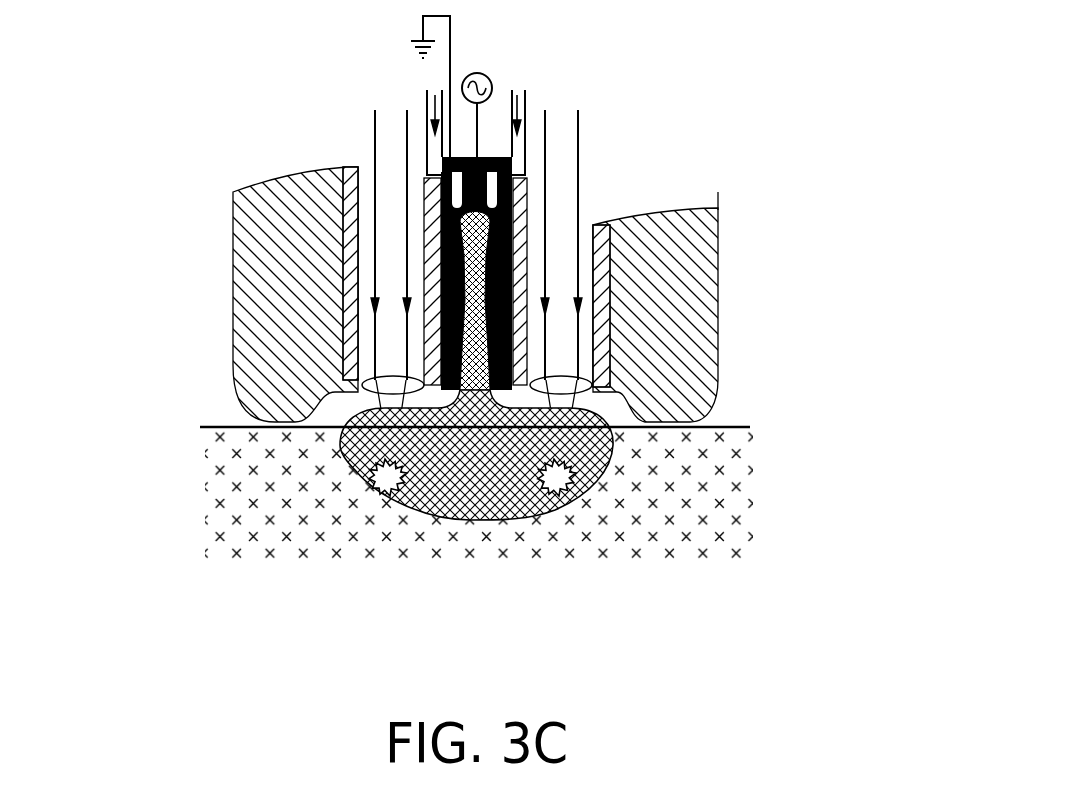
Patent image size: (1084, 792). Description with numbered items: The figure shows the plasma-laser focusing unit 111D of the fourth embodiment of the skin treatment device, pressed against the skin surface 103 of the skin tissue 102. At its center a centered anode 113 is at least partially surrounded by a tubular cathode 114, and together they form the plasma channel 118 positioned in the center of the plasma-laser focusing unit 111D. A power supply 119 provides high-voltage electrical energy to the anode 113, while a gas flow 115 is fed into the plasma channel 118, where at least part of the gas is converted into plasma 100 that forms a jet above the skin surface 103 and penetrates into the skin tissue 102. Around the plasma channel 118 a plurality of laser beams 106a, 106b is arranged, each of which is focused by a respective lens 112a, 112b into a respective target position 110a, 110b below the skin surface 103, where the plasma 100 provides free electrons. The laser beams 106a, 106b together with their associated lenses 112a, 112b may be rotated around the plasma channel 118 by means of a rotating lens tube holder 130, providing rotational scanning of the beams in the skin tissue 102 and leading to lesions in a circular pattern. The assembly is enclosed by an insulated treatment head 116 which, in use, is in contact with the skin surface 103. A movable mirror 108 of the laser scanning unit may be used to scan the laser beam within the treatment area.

The plasma 100 is at (478, 480).
The skin tissue 102 is at (735, 495).
The skin surface 103 is at (745, 425).
The laser beam 106a is at (375, 135).
The laser beam 106b is at (578, 118).
The movable mirror 108 is at (600, 320).
The target position 110a is at (380, 473).
The target position 110b is at (575, 473).
The lens 112a is at (395, 378).
The lens 112b is at (540, 375).
The anode 113 is at (513, 165).
The cathode 114 is at (515, 262).
The gas flow 115 is at (428, 100).
The insulated treatment head 116 is at (712, 240).
The plasma channel 118 is at (495, 218).
The power supply 119 is at (492, 88).
The rotating lens tube holder 130 is at (350, 232).
The plasma-laser focusing unit 111D is at (870, 113).